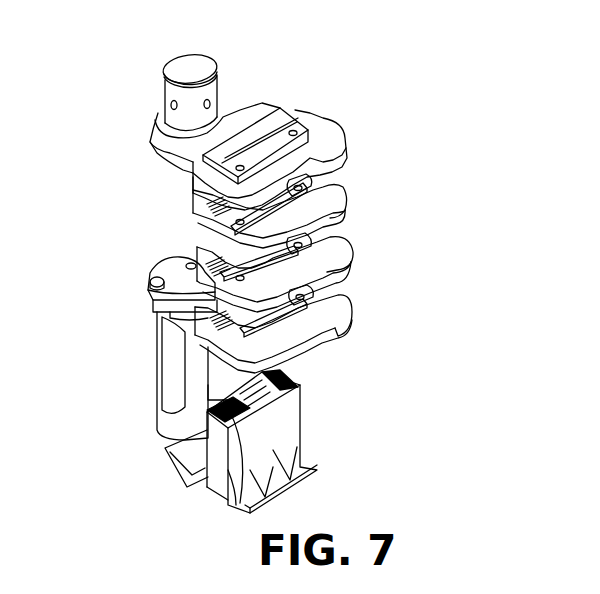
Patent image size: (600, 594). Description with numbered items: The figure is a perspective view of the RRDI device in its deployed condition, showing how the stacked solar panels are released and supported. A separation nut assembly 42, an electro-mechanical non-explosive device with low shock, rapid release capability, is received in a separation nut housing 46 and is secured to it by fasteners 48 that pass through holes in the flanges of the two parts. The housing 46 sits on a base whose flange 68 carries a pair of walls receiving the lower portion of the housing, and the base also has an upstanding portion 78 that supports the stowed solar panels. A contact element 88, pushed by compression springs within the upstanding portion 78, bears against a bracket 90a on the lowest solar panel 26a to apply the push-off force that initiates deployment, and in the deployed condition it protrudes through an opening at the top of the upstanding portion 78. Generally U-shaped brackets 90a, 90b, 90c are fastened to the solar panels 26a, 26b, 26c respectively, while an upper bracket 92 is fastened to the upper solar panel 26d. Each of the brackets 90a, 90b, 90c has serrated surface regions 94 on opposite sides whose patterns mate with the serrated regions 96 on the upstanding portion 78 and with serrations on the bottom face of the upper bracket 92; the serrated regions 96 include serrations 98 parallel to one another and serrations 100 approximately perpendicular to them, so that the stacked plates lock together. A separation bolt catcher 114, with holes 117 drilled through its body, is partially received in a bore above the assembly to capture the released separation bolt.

The separation bolt catcher 114 is at (197, 66).
The holes 117 is at (168, 106).
The upper solar panel 26d is at (344, 143).
The bracket 90c is at (310, 187).
The solar panel 26c is at (321, 219).
The bracket 90b is at (312, 246).
The solar panel 26b is at (340, 266).
The upper bracket 92 is at (308, 298).
The bracket 90a is at (320, 318).
The serrated surface regions 94 is at (278, 176).
The fasteners 48 is at (150, 284).
The separation nut assembly 42 is at (168, 350).
The solar panel 26a is at (208, 356).
The contact element 88 is at (215, 397).
The separation nut housing 46 is at (160, 418).
The serrated regions 96 is at (198, 440).
The serrations 98 is at (300, 390).
The flange 68 is at (313, 470).
The serrations 100 is at (293, 492).
The upstanding portion 78 is at (229, 503).